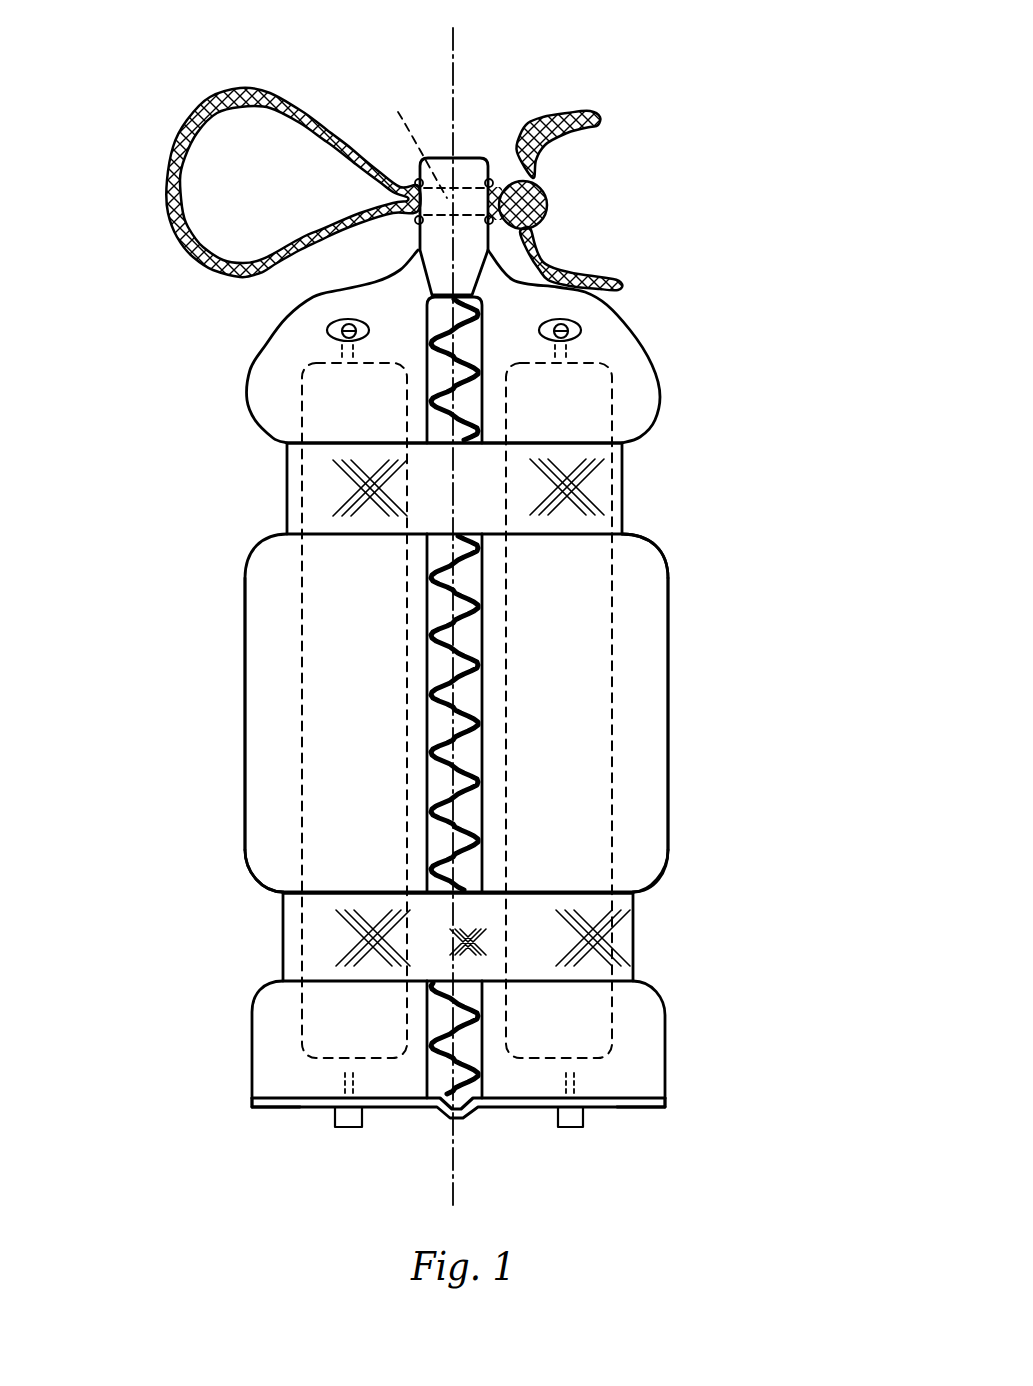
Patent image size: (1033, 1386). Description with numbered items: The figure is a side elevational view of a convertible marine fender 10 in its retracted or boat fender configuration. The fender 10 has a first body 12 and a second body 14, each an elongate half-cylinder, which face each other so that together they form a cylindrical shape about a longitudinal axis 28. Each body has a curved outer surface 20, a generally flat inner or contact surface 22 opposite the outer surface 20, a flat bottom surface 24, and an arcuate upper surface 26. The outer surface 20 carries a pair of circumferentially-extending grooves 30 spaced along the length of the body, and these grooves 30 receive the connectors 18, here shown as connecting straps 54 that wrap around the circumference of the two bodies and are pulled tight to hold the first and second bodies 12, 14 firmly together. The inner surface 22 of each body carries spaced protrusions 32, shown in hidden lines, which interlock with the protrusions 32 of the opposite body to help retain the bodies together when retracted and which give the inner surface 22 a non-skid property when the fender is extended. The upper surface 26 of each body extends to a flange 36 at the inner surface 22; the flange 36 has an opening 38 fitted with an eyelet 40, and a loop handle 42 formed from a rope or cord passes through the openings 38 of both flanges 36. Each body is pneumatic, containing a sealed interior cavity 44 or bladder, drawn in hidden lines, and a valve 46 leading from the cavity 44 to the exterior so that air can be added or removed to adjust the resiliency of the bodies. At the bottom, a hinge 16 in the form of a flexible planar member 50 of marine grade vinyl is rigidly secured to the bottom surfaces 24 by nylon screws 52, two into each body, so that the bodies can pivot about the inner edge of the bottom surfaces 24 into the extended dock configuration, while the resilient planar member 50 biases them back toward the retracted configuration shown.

The convertible marine fender 10 is at (122, 723).
The first body 12 is at (245, 610).
The second body 14 is at (670, 593).
The hinge 16 is at (528, 1112).
The connectors 18 is at (588, 443).
The outer surface 20 is at (245, 667).
The inner surface 22 is at (432, 390).
The bottom surface 24 is at (292, 1100).
The upper surface 26 is at (290, 318).
The longitudinal axis 28 is at (455, 1173).
The grooves 30 is at (273, 443).
The protrusions 32 is at (465, 308).
The flange 36 is at (433, 157).
The opening 38 is at (413, 135).
The eyelet 40 is at (413, 180).
The handle 42 is at (205, 92).
The interior cavity 44 is at (612, 647).
The valve 46 is at (327, 337).
The planar member 50 is at (263, 1107).
The screws 52 is at (342, 1128).
The connecting straps 54 is at (623, 510).